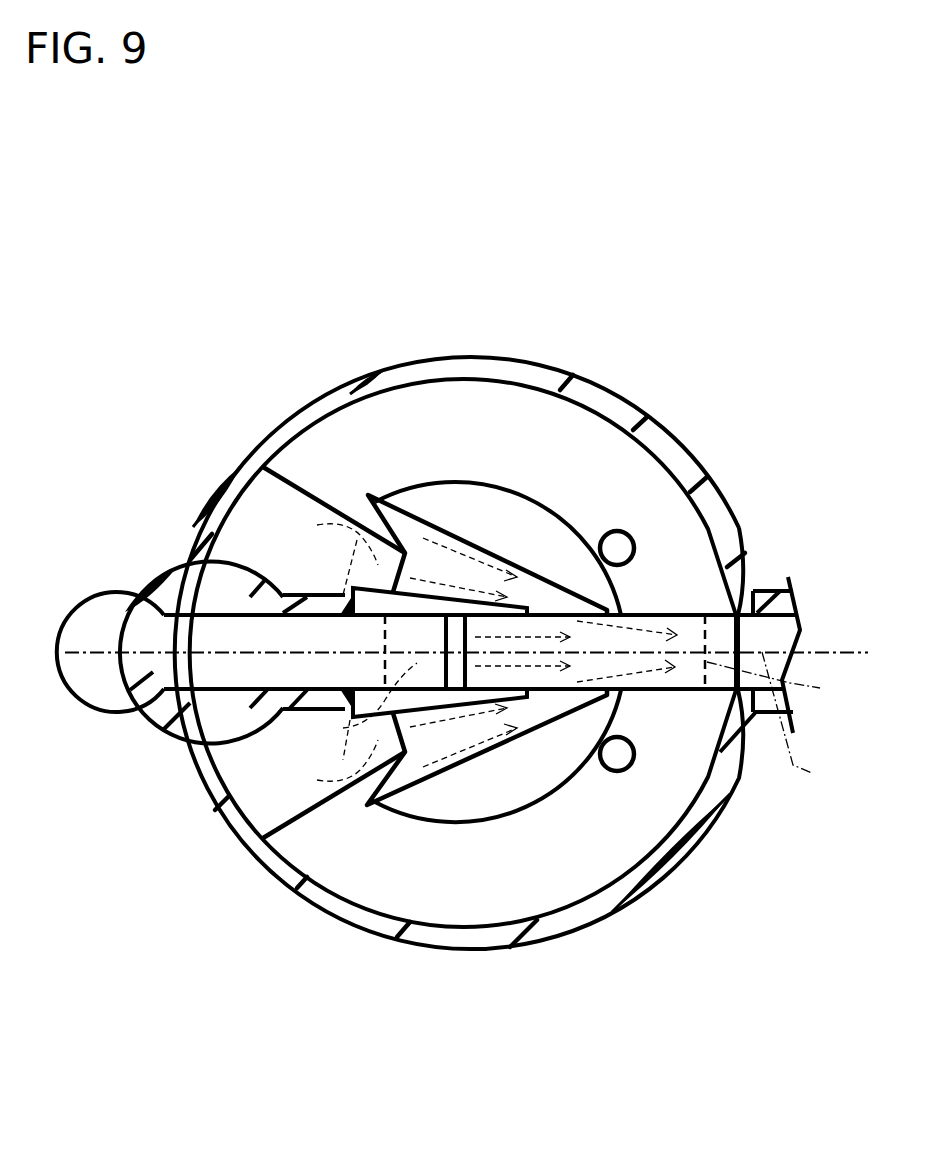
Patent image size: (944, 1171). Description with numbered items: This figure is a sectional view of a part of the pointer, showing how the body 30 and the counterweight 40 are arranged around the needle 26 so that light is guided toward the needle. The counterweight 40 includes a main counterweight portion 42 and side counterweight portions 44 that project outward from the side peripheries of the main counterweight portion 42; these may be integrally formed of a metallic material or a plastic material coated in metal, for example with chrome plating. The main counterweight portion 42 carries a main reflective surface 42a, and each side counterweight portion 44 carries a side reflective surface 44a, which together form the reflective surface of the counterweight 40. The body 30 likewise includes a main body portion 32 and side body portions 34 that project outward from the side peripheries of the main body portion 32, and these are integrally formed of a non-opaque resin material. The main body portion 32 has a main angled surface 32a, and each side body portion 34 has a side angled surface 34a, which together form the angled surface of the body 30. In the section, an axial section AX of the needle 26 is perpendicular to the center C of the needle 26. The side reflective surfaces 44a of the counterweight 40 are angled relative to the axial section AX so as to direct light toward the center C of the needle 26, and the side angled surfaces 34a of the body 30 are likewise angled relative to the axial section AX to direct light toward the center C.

The needle 26 is at (743, 627).
The body 30 is at (483, 975).
The main body portion 32 is at (533, 680).
The main angled surface 32a is at (457, 627).
The side body portions 34 is at (483, 552).
The side angled surface 34a is at (417, 527).
The counterweight 40 is at (295, 847).
The main counterweight portion 42 is at (193, 639).
The main reflective surface 42a is at (345, 728).
The side counterweight portions 44 is at (247, 550).
The side reflective surface 44a is at (323, 655).
The axial section AX is at (466, 720).
The center C is at (776, 682).